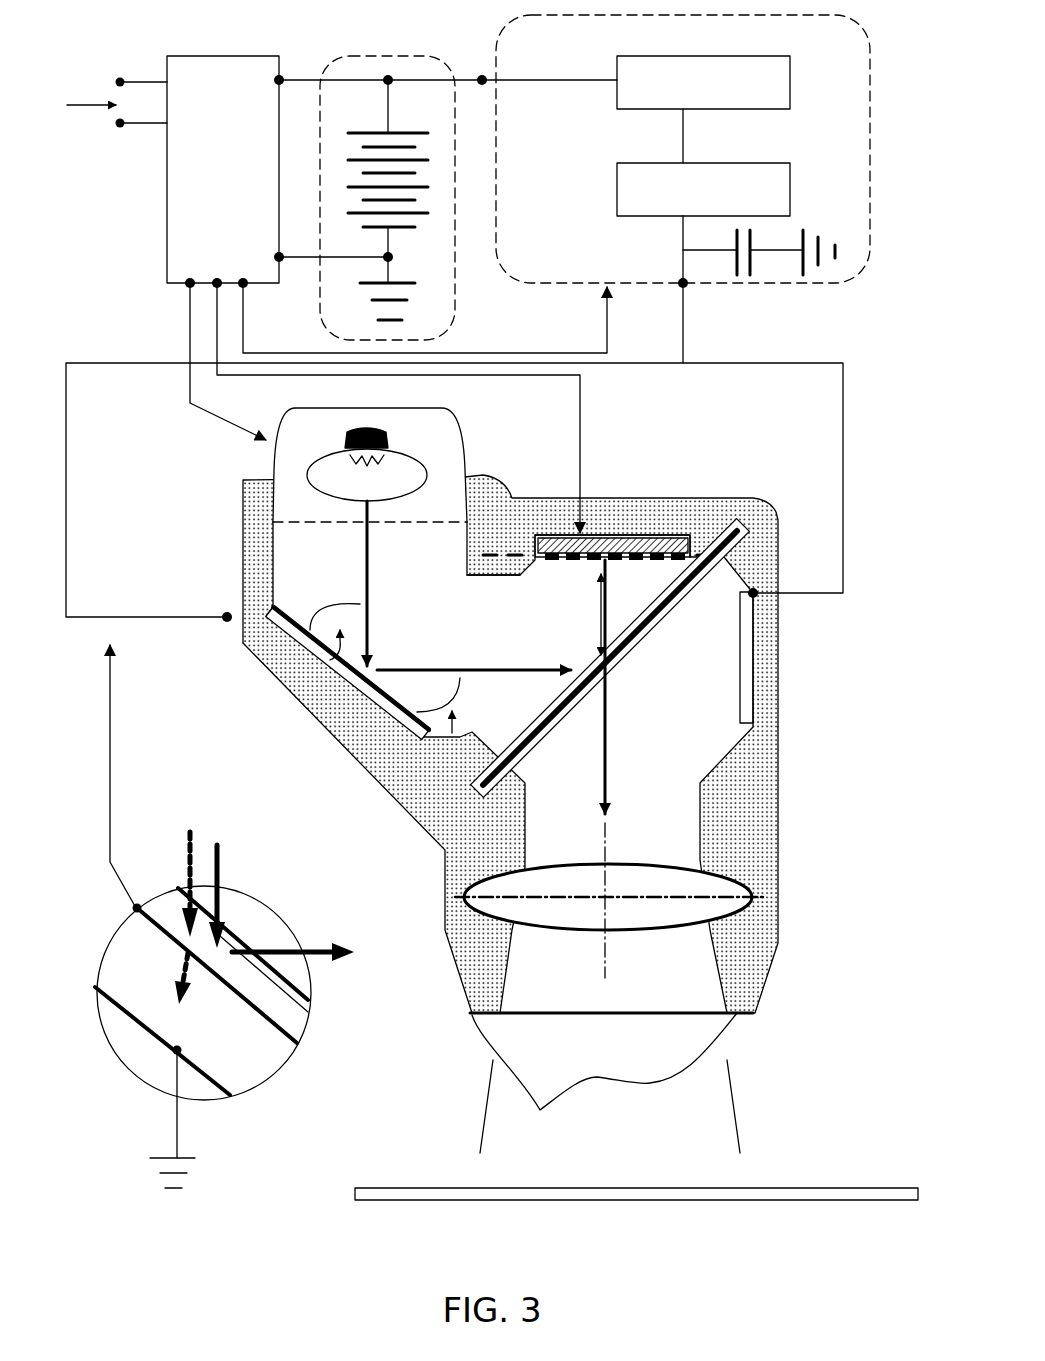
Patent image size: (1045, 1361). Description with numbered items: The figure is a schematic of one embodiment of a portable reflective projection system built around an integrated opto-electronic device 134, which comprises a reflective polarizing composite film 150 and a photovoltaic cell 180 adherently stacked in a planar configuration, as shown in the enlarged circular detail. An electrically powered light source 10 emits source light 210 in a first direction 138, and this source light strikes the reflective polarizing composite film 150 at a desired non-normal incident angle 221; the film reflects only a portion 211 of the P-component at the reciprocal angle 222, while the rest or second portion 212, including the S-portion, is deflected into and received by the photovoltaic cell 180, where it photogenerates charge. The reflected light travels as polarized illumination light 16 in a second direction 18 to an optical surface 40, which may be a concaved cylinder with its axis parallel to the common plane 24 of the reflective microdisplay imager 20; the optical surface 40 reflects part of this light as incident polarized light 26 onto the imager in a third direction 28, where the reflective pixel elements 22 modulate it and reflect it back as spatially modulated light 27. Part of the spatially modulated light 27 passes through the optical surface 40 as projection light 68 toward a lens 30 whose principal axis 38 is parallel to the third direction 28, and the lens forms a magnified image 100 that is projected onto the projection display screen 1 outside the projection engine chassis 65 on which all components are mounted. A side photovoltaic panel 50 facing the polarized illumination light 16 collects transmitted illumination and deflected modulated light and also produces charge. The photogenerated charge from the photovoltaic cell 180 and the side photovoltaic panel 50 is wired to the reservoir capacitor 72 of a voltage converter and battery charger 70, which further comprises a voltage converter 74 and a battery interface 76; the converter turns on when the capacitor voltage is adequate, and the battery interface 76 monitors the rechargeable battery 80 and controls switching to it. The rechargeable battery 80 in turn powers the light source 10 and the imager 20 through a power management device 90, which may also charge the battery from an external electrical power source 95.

The projection display screen 1 is at (457, 1195).
The light source 10 is at (306, 361).
The polarized illumination light 16 is at (440, 617).
The second direction 18 is at (405, 672).
The reflective microdisplay imager 20 is at (620, 537).
The reflective pixel elements 22 is at (672, 550).
The common plane 24 is at (522, 557).
The incident polarized light 26 is at (638, 630).
The spatially modulated light 27 is at (610, 595).
The third direction 28 is at (605, 735).
The lens 30 is at (623, 930).
The principal axis 38 is at (605, 840).
The optical surface 40 is at (452, 808).
The side photovoltaic panel 50 is at (745, 683).
The projection engine chassis 65 is at (475, 940).
The projection light 68 is at (669, 687).
The voltage converter and battery charger 70 is at (818, 283).
The reservoir capacitor 72 is at (753, 283).
The voltage converter 74 is at (617, 200).
The battery interface 76 is at (617, 109).
The rechargeable battery 80 is at (393, 56).
The power management device 90 is at (167, 255).
The external electrical power source 95 is at (84, 102).
The magnified image 100 is at (606, 1083).
The integrated opto-electronic device 134 is at (358, 678).
The first direction 138 is at (162, 1087).
The reflective polarizing composite film 150 is at (308, 1013).
The photovoltaic cell 180 is at (253, 1070).
The source light 210 is at (190, 830).
The reflected portion 211 is at (308, 947).
The second portion 212 is at (185, 973).
The non-normal incident angle 221 is at (315, 655).
The reciprocal angle 222 is at (452, 733).